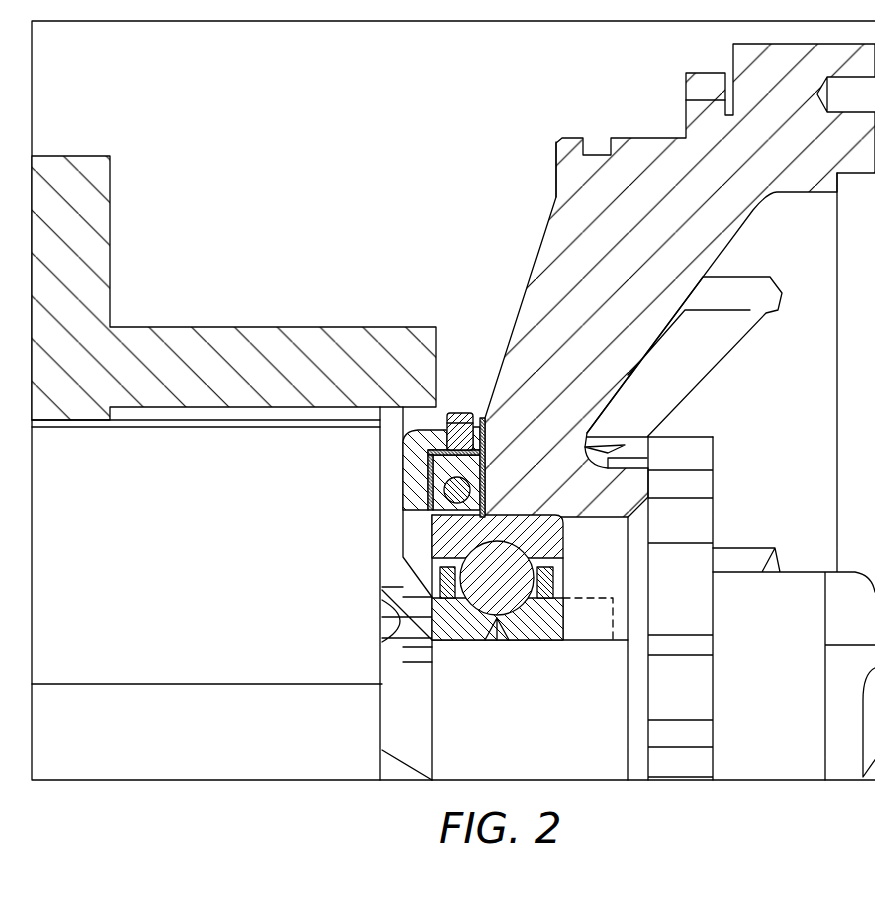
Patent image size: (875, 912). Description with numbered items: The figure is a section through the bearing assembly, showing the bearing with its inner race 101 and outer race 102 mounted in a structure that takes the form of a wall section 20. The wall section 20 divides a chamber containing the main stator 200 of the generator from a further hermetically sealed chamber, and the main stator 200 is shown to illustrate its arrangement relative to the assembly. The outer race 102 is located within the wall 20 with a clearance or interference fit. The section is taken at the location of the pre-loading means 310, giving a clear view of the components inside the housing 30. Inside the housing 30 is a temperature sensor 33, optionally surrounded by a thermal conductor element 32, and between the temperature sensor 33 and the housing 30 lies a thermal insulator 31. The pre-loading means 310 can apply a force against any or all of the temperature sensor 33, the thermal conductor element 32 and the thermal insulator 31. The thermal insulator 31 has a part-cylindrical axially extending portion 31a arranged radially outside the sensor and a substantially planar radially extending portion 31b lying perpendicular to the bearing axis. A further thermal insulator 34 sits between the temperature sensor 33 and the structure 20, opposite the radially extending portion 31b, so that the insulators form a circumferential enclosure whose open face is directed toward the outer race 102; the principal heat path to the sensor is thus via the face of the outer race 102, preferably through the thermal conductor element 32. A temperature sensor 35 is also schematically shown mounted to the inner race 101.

The main stator 200 is at (302, 336).
The wall section 20 is at (545, 243).
The housing 30 is at (445, 481).
The pre-loading means 310 is at (458, 430).
The thermal insulator 31 is at (427, 449).
The axially extending portion 31a is at (482, 464).
The radially extending portion 31b is at (428, 470).
The thermal conductor element 32 is at (438, 506).
The temperature sensor 33 is at (453, 491).
The further thermal insulator 34 is at (486, 479).
The outer race 102 is at (554, 541).
The inner race 101 is at (463, 636).
The temperature sensor 35 is at (586, 628).